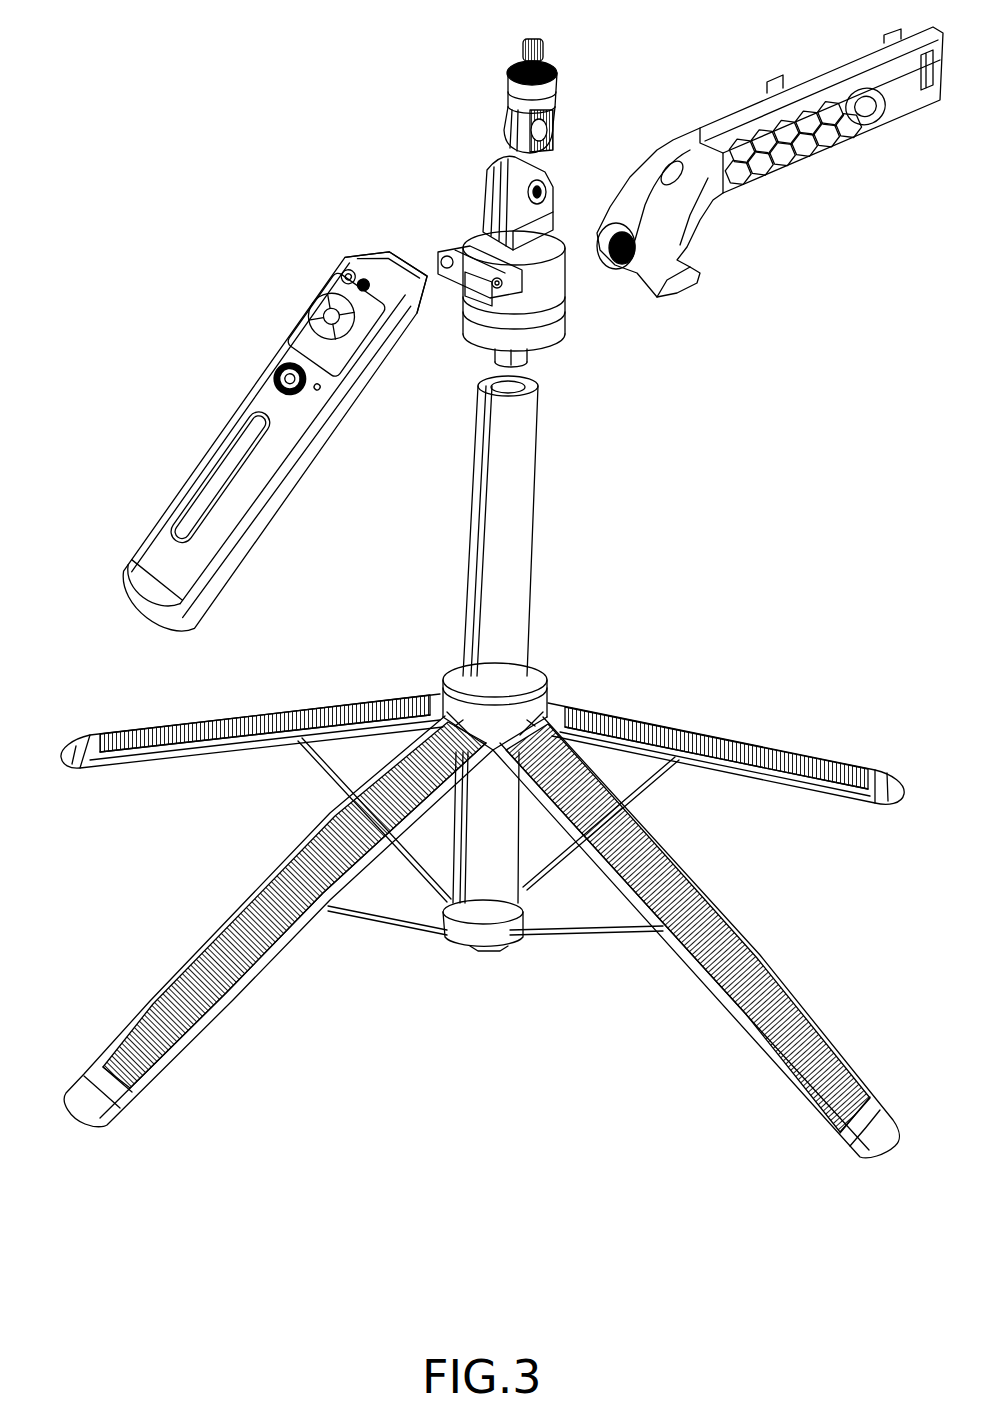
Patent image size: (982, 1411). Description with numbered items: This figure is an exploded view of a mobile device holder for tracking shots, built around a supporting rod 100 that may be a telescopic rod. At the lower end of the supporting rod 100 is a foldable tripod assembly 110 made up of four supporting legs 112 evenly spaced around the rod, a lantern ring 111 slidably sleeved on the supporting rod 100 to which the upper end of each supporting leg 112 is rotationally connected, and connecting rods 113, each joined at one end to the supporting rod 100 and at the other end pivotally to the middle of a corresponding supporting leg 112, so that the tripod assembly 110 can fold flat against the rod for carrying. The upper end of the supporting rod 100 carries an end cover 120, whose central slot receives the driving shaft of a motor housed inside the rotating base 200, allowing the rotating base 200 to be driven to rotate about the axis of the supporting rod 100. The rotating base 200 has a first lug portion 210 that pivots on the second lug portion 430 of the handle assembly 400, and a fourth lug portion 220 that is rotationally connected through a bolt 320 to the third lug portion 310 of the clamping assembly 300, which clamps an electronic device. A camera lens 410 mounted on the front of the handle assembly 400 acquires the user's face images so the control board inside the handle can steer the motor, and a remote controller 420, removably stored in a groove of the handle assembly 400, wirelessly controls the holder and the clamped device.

The supporting rod 100 is at (522, 558).
The tripod assembly 110 is at (658, 702).
The lantern ring 111 is at (543, 672).
The supporting leg 112 is at (271, 962).
The connecting rod 113 is at (379, 916).
The end cover 120 is at (547, 337).
The rotating base 200 is at (550, 287).
The first lug portion 210 is at (447, 247).
The fourth lug portion 220 is at (497, 170).
The clamping assembly 300 is at (810, 160).
The third lug portion 310 is at (632, 213).
The bolt 320 is at (620, 267).
The handle assembly 400 is at (221, 413).
The camera lens 410 is at (285, 368).
The remote controller 420 is at (329, 285).
The second lug portion 430 is at (404, 272).